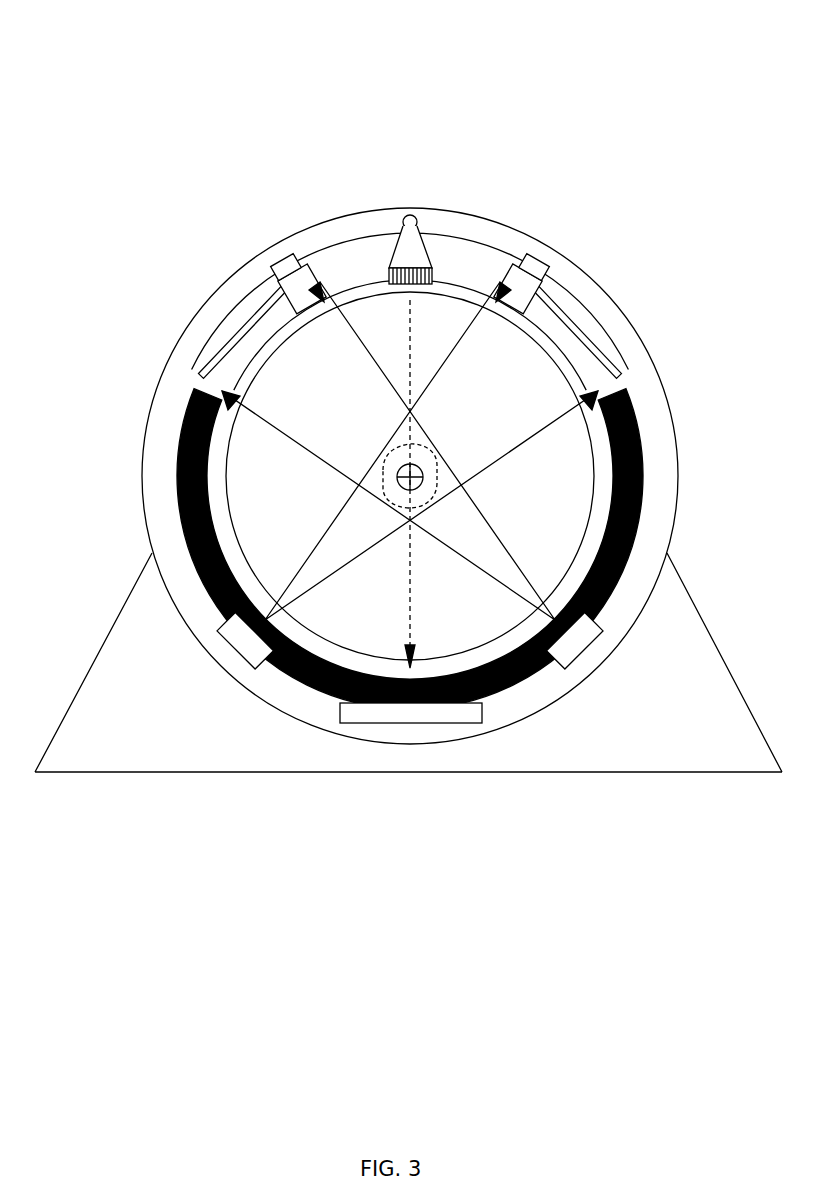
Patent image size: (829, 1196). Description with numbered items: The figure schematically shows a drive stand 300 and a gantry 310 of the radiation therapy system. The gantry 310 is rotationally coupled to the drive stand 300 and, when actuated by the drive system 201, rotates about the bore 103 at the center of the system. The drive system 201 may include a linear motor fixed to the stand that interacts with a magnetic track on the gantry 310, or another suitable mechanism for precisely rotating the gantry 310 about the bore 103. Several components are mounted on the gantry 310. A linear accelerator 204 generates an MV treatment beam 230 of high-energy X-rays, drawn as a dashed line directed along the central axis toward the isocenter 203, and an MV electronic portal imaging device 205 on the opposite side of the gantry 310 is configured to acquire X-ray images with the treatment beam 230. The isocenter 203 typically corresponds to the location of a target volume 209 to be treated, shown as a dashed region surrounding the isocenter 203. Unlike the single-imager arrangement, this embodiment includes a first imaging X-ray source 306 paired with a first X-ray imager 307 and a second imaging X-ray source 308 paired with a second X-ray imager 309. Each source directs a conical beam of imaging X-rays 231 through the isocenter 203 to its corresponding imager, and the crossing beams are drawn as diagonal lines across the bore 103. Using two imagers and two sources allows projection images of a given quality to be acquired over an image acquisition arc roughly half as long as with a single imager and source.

The drive stand 300 is at (593, 77).
The drive system 201 is at (540, 237).
The linear accelerator (LINAC) 204 is at (393, 230).
The second X-ray imager 309 is at (286, 268).
The first X-ray imager 307 is at (532, 264).
The first imaging X-ray source 306 is at (226, 648).
The second imaging X-ray source 308 is at (594, 648).
The gantry 310 is at (648, 470).
The bore 103 is at (380, 626).
The isocenter 203 is at (424, 470).
The target volume 209 is at (384, 466).
The imaging X-rays 231 is at (330, 468).
The MV treatment beam 230 is at (413, 628).
The MV electronic portal imaging device (EPID) 205 is at (435, 723).